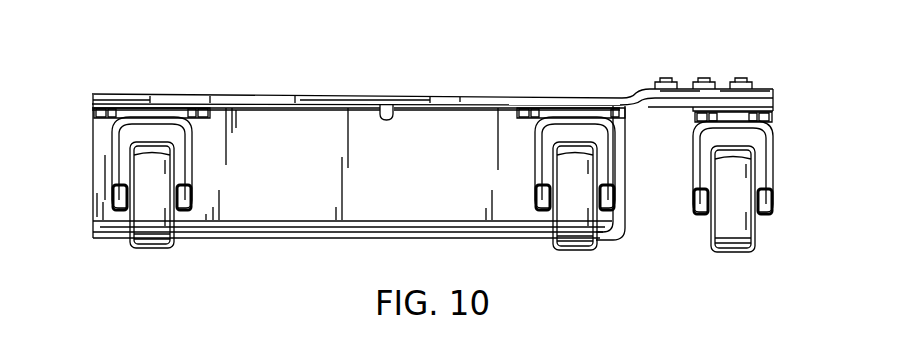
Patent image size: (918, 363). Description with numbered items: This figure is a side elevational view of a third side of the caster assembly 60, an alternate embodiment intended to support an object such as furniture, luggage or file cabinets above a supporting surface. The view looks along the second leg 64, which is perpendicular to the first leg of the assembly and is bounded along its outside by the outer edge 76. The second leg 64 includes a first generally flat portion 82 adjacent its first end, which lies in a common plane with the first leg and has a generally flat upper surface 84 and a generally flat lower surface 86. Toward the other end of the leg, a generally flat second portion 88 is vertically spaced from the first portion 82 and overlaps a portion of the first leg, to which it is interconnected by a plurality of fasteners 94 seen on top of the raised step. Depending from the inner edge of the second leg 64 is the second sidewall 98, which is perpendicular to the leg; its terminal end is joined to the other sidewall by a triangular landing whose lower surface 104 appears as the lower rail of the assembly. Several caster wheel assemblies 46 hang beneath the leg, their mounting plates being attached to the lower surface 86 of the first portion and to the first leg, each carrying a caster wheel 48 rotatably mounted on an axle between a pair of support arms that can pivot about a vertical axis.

The caster wheel assembly 46 is at (116, 178).
The caster wheel 48 is at (151, 246).
The caster assembly 60 is at (163, 278).
The second leg 64 is at (219, 94).
The outer edge 76 is at (118, 97).
The first portion 82 is at (470, 93).
The upper surface 84 is at (258, 95).
The lower surface 86 is at (393, 106).
The second portion 88 is at (775, 89).
The fasteners 94 is at (740, 78).
The second sidewall 98 is at (291, 176).
The lower surface 104 is at (243, 239).